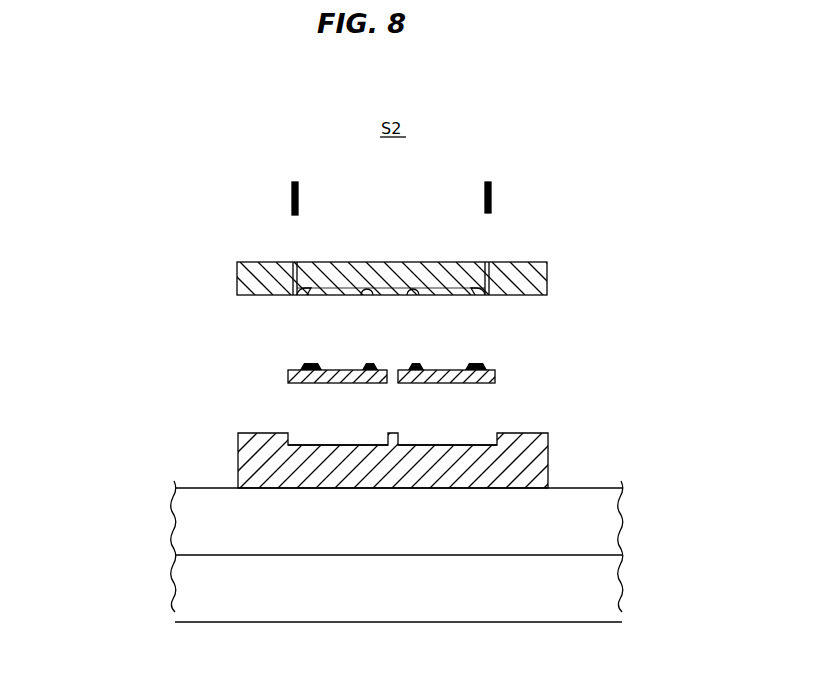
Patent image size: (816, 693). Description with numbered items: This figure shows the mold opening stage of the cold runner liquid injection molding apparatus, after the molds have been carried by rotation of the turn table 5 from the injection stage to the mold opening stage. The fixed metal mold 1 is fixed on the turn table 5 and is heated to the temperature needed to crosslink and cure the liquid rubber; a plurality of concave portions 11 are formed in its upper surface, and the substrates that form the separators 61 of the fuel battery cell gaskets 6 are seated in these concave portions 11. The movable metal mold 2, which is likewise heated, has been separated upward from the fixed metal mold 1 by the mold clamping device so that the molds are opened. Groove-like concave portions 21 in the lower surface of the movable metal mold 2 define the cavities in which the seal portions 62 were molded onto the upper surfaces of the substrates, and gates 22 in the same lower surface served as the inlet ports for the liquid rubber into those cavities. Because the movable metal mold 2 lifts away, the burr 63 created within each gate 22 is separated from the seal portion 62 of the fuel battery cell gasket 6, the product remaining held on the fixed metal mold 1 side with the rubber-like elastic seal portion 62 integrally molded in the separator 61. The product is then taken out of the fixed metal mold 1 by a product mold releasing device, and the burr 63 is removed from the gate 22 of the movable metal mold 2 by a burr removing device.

The fixed metal mold 1 is at (537, 457).
The concave portions 11 is at (340, 440).
The movable metal mold 2 is at (396, 289).
The groove-like concave portions 21 is at (368, 294).
The gates 22 is at (270, 288).
The turn table 5 is at (212, 524).
The fuel battery cell gasket 6 is at (391, 368).
The separator 61 is at (318, 384).
The seal portion 62 is at (312, 362).
The burr 63 is at (290, 192).